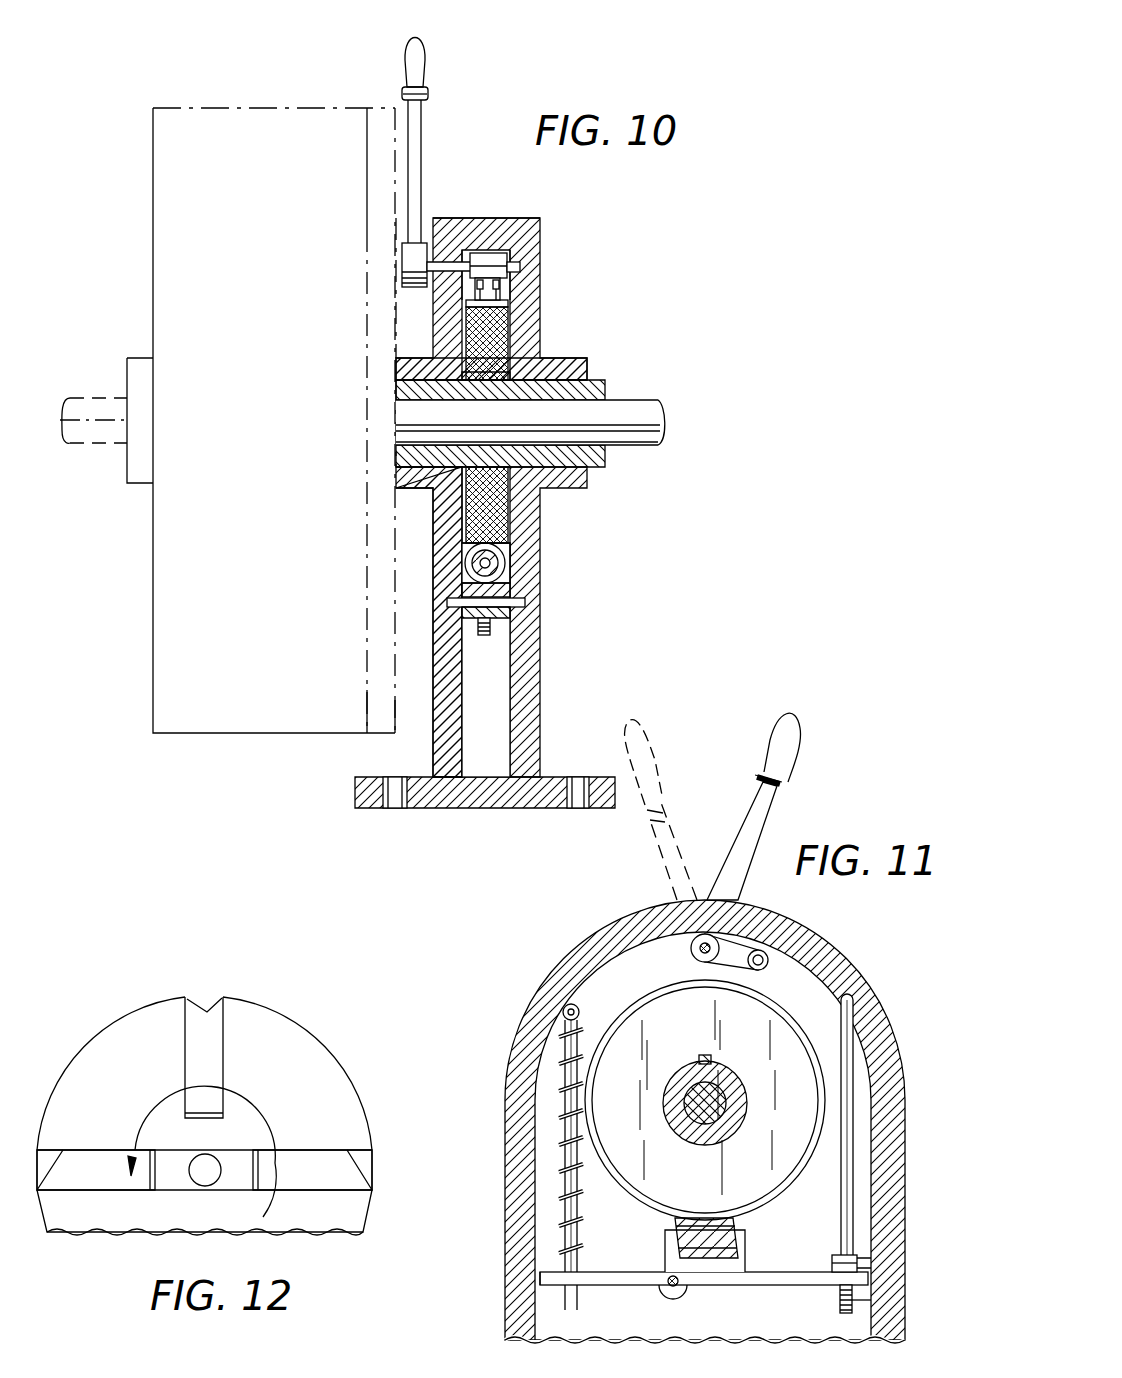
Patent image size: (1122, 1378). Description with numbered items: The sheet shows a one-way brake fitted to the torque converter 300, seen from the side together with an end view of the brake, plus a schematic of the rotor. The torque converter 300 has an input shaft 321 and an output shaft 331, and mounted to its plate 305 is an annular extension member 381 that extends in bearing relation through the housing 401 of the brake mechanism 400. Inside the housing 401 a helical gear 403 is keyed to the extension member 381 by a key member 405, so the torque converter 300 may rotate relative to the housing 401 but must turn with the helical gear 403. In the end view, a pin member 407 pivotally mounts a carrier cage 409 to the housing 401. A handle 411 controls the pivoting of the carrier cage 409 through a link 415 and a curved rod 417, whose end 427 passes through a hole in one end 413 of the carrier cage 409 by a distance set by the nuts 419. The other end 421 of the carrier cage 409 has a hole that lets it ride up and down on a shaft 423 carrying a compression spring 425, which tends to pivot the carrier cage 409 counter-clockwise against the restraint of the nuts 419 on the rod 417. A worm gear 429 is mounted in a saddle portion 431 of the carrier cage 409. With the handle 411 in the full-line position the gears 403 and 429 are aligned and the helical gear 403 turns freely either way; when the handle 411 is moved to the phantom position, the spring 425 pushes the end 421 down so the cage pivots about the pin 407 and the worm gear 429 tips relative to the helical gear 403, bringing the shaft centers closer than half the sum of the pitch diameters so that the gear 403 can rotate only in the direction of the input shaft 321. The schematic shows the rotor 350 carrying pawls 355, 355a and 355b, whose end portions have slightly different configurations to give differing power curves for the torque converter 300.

In FIG. 10, the torque converter 300 is at (270, 78).
In FIG. 10, the plate 305 is at (377, 725).
In FIG. 10, the input shaft 321 is at (83, 400).
In FIG. 10, the output shaft 331 is at (666, 422).
In FIG. 11, the output shaft 331 is at (718, 1128).
In FIG. 12, the rotor 350 is at (108, 1040).
In FIG. 12, the pawl 355 is at (308, 1163).
In FIG. 12, the pawl 355a is at (202, 1010).
In FIG. 12, the pawl 355b is at (70, 1165).
In FIG. 10, the annular extension member 381 is at (606, 388).
In FIG. 11, the annular extension member 381 is at (747, 1119).
In FIG. 10, the brake mechanism 400 is at (572, 218).
In FIG. 10, the housing 401 is at (541, 316).
In FIG. 11, the housing 401 is at (505, 1086).
In FIG. 10, the helical gear 403 is at (500, 345).
In FIG. 11, the helical gear 403 is at (762, 1015).
In FIG. 10, the key member 405 is at (592, 366).
In FIG. 11, the key member 405 is at (712, 1060).
In FIG. 10, the pin member 407 is at (527, 604).
In FIG. 11, the pin member 407 is at (668, 1287).
In FIG. 11, the carrier cage 409 is at (722, 1276).
In FIG. 10, the handle 411 is at (424, 55).
In FIG. 11, the handle 411 is at (775, 797).
In FIG. 11, the end of carrier cage 413 is at (832, 1278).
In FIG. 10, the link 415 is at (500, 286).
In FIG. 11, the link 415 is at (755, 952).
In FIG. 11, the curved rod 417 is at (857, 1076).
In FIG. 11, the nuts 419 is at (858, 1262).
In FIG. 11, the end of carrier cage 421 is at (545, 1283).
In FIG. 11, the shaft 423 is at (563, 1195).
In FIG. 11, the compression spring 425 is at (563, 1128).
In FIG. 11, the end of curved rod 427 is at (862, 1308).
In FIG. 10, the worm gear 429 is at (506, 565).
In FIG. 11, the worm gear 429 is at (680, 1240).
In FIG. 11, the saddle portion 431 is at (742, 1244).